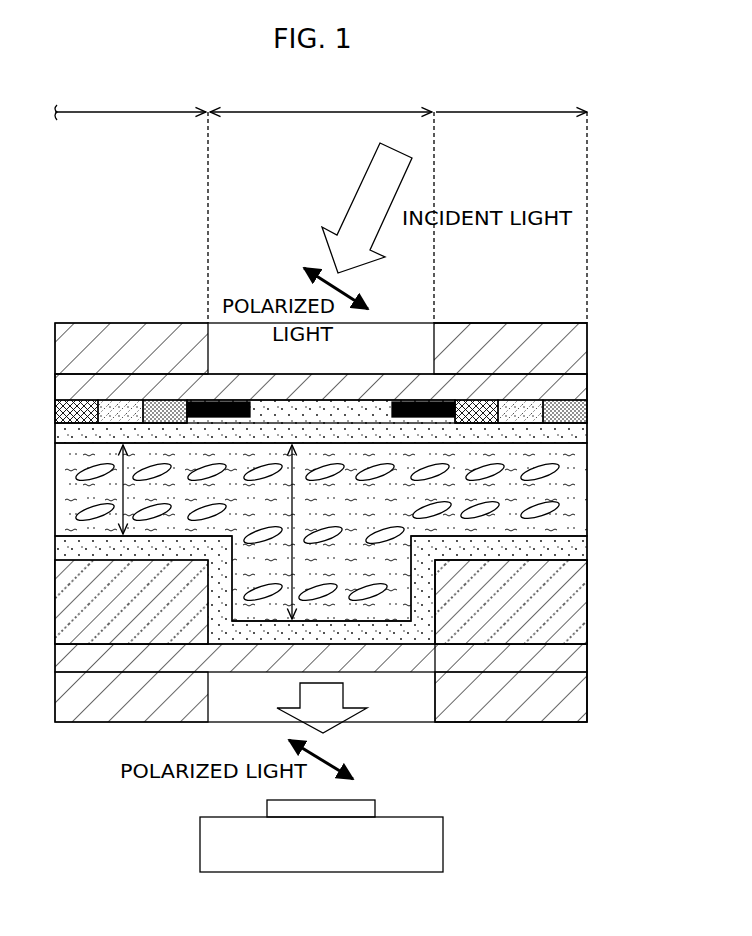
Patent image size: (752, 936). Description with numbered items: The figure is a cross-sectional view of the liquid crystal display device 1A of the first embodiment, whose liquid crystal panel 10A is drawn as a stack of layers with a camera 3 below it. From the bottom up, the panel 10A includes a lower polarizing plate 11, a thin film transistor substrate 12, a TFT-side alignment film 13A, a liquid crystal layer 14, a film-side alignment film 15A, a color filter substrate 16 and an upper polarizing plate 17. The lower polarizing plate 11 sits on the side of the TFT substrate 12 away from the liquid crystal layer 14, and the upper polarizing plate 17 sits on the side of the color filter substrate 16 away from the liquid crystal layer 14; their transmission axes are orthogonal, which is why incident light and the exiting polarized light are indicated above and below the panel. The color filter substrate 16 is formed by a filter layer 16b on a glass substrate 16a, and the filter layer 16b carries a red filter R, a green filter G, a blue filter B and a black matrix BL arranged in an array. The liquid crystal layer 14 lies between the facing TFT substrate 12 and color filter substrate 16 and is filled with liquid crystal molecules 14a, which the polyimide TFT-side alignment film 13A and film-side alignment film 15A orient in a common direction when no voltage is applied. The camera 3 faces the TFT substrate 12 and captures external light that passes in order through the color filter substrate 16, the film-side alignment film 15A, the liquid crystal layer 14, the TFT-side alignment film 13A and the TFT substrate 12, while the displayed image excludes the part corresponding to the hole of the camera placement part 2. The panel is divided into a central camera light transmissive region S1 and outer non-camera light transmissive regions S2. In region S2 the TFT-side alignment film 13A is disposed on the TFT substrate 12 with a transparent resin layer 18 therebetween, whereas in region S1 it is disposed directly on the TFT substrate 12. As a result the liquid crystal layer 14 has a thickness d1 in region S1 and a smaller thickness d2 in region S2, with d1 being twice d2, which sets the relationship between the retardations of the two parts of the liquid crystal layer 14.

The liquid crystal display device 1A is at (106, 241).
The liquid crystal panel 10A is at (509, 322).
The upper polarizing plate 17 is at (588, 350).
The color filter substrate 16 is at (648, 380).
The glass substrate 16a is at (588, 387).
The filter layer 16b is at (588, 412).
The red filter R is at (79, 410).
The green filter G is at (122, 410).
The blue filter B is at (166, 410).
The black matrix BL is at (228, 406).
The film-side alignment film 15A is at (588, 438).
The liquid crystal layer 14 is at (588, 480).
The liquid crystal molecules 14a is at (562, 508).
The TFT-side alignment film 13A is at (588, 550).
The transparent layer 18 is at (588, 605).
The TFT substrate 12 is at (588, 662).
The lower polarizing plate 11 is at (588, 698).
The camera placement part 2 is at (435, 700).
The camera 3 is at (443, 847).
The camera light transmissive region S1 is at (321, 204).
The non-camera light transmissive region S2 is at (321, 204).
The thickness of first part of liquid crystal layer d1 is at (307, 532).
The thickness of second part of liquid crystal layer d2 is at (138, 489).